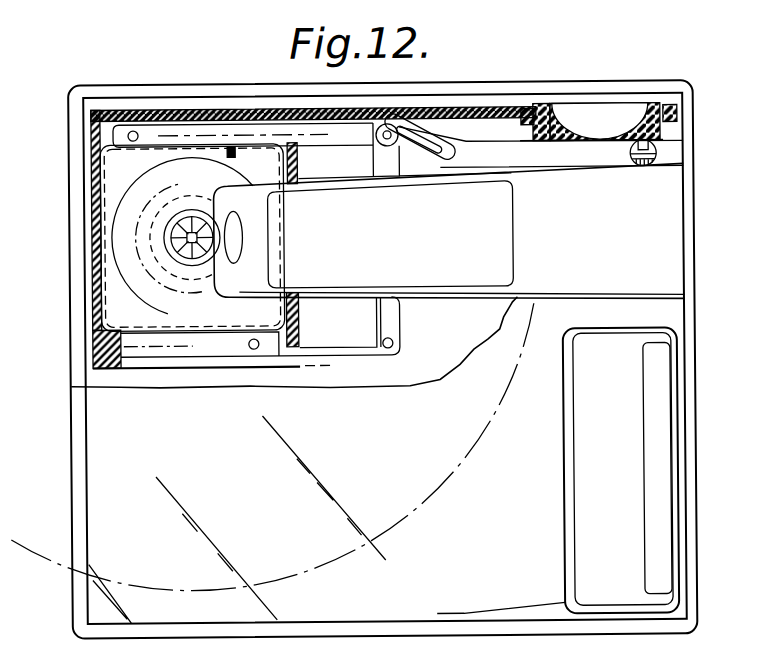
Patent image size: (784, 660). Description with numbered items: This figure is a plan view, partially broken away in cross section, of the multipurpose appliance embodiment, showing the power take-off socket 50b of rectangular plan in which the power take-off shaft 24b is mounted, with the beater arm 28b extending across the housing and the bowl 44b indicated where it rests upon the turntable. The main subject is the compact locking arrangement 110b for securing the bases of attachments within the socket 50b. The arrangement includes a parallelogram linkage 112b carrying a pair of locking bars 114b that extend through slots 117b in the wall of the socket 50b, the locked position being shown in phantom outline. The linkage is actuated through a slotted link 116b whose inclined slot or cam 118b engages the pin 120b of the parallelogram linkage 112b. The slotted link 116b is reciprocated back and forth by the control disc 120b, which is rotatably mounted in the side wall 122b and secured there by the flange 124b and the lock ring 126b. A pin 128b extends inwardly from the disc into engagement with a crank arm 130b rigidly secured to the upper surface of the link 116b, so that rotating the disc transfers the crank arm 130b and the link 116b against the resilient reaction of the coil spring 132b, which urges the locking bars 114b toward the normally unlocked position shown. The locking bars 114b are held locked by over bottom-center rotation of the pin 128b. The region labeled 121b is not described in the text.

The power take-off shaft 24b is at (192, 237).
The beater arm 28b is at (477, 268).
The bowl 44b is at (427, 473).
The power take-off socket 50b is at (237, 318).
The locking arrangement 110b is at (405, 115).
The parallelogram linkage 112b is at (376, 168).
The locking bars 114b is at (162, 127).
The slotted link 116b is at (510, 158).
The slots 117b is at (233, 153).
The inclined slot or cam 118b is at (436, 152).
The control disc 120b is at (389, 146).
The cylinder bore 121b is at (617, 112).
The side wall 122b is at (657, 108).
The flange 124b is at (533, 100).
The lock ring 126b is at (527, 142).
The pin 128b is at (644, 168).
The crank arm 130b is at (660, 167).
The coil spring 132b is at (662, 147).